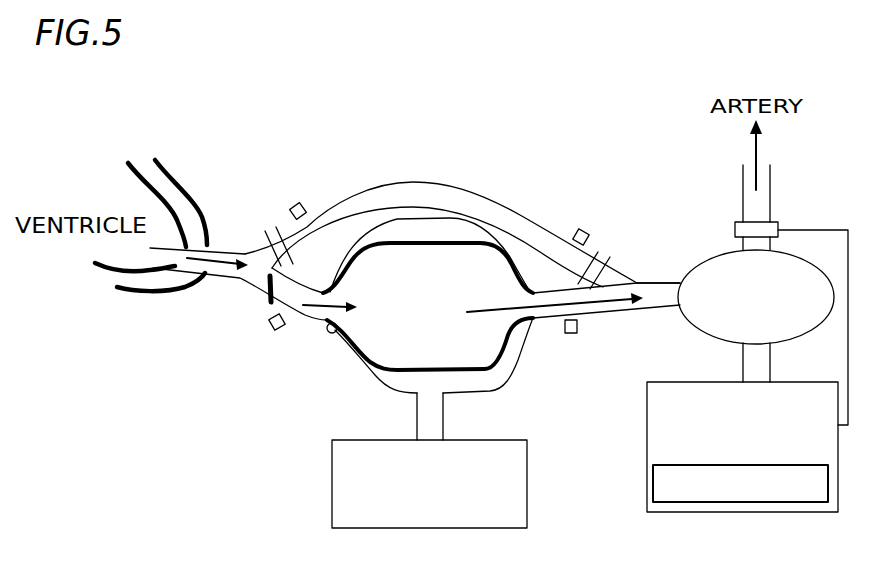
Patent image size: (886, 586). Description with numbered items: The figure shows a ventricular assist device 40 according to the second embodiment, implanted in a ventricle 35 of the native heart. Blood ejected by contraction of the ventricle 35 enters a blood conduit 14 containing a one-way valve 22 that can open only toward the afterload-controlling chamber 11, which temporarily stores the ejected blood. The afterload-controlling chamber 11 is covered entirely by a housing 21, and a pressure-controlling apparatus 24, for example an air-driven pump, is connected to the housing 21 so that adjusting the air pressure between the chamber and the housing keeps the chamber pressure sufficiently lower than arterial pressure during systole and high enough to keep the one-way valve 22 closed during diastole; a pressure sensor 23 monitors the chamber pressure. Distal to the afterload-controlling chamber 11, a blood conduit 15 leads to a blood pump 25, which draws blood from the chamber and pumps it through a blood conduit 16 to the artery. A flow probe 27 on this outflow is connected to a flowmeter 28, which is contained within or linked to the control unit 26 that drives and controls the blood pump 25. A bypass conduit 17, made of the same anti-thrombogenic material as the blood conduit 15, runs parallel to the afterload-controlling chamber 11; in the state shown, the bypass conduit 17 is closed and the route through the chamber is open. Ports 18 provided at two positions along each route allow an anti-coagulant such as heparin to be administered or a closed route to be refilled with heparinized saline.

The afterload-controlling chamber 11 is at (497, 355).
The blood conduit 14 is at (230, 247).
The blood conduit 15 is at (660, 283).
The blood conduit 16 is at (743, 176).
The bypass conduit 17 is at (497, 190).
The ports 18 is at (297, 202).
The housing 21 is at (490, 383).
The one-way valve 22 is at (267, 290).
The pressure sensor 23 is at (336, 333).
The pressure-controlling apparatus 24 is at (466, 440).
The blood pump 25 is at (690, 325).
The control unit 26 is at (647, 413).
The flow probe 27 is at (773, 222).
The flowmeter 28 is at (752, 502).
The ventricle 35 is at (167, 202).
The ventricular assist device 40 is at (415, 253).